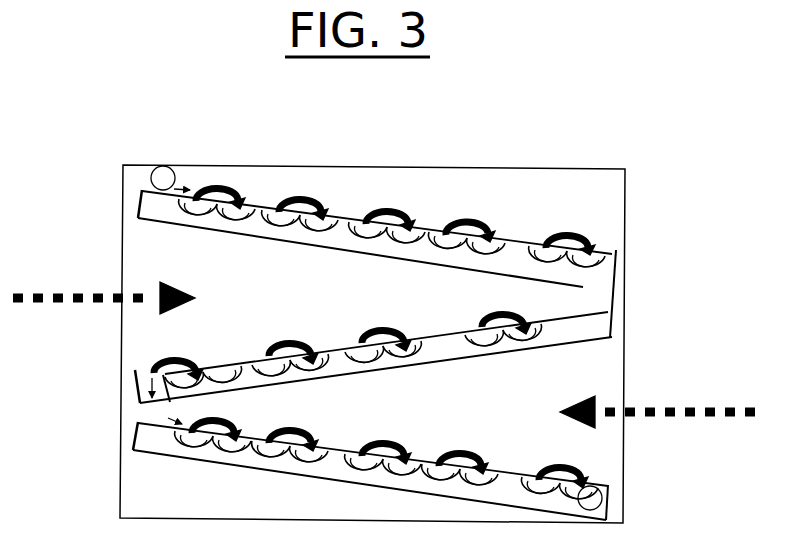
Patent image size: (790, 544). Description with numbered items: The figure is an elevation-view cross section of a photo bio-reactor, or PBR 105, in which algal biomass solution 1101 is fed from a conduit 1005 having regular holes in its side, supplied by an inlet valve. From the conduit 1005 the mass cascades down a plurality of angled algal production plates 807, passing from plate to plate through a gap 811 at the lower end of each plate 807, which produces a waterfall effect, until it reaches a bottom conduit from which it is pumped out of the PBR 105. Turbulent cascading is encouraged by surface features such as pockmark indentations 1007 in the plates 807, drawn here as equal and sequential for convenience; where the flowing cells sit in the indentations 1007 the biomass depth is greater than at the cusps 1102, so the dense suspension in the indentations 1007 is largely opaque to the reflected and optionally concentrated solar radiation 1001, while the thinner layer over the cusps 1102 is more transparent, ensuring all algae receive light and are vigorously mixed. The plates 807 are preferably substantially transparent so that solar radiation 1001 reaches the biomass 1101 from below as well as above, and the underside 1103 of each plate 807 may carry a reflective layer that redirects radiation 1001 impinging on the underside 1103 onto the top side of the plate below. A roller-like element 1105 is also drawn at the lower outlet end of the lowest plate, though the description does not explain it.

The PBR 105 is at (643, 312).
The algal production plate 807 is at (142, 200).
The gap 811 is at (598, 297).
The solar radiation 1001 is at (384, 345).
The conduit 1005 is at (150, 182).
The pockmark indentations 1007 is at (238, 222).
The algal biomass solution 1101 is at (303, 200).
The cusps 1102 is at (345, 228).
The underside 1103 is at (357, 257).
The outlet roller 1105 is at (602, 498).